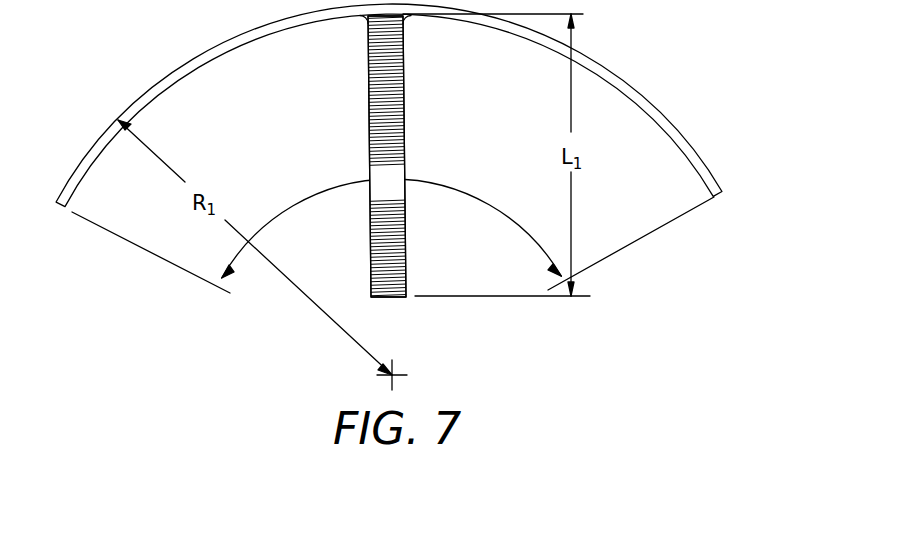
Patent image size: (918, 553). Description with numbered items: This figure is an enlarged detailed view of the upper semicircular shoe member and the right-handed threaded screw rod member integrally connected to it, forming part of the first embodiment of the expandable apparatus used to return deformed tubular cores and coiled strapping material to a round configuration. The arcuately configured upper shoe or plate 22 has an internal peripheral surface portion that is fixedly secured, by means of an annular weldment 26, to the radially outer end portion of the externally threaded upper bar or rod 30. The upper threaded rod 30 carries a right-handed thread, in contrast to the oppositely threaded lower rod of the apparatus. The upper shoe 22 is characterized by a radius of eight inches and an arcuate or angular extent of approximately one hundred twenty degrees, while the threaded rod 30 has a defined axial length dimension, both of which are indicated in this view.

The upper shoe 22 is at (155, 82).
The annular weldment 26 is at (360, 20).
The upper threaded rod 30 is at (383, 112).